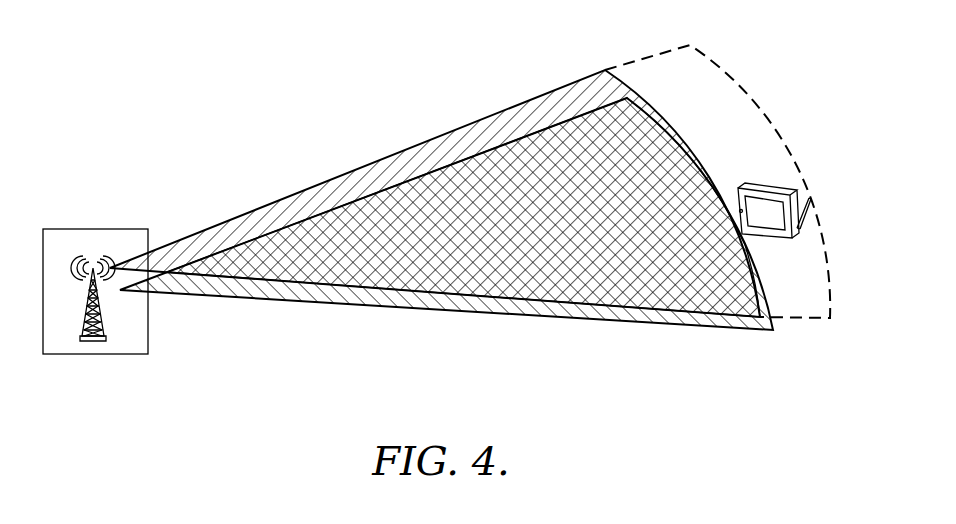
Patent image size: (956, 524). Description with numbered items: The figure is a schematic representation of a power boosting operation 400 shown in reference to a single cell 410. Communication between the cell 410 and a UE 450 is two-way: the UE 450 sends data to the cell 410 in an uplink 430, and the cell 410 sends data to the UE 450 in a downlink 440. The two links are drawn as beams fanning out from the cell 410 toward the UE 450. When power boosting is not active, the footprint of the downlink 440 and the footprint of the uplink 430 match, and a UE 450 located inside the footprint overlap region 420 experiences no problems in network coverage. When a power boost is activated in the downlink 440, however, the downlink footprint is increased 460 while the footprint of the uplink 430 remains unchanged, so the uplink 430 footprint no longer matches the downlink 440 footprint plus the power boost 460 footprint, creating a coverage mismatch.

The power boosting operation 400 is at (310, 56).
The cell 410 is at (92, 338).
The footprint overlap region 420 is at (500, 272).
The uplink 430 is at (121, 294).
The downlink 440 is at (111, 261).
The UE 450 is at (768, 185).
The power boost footprint 460 is at (792, 296).